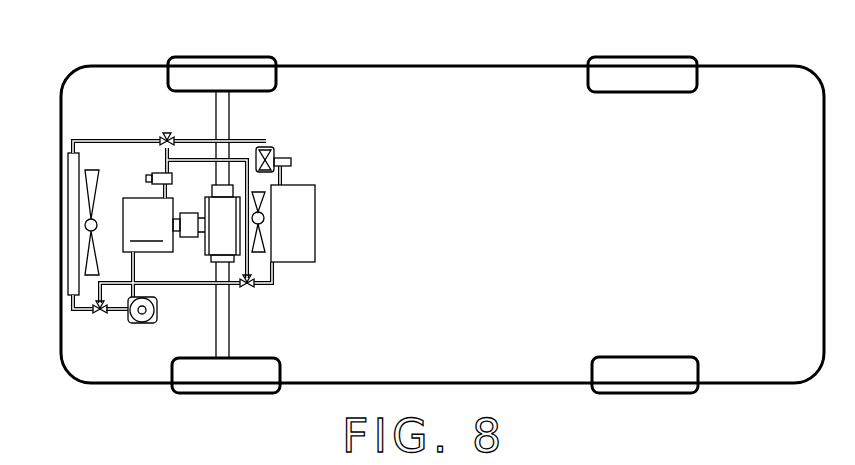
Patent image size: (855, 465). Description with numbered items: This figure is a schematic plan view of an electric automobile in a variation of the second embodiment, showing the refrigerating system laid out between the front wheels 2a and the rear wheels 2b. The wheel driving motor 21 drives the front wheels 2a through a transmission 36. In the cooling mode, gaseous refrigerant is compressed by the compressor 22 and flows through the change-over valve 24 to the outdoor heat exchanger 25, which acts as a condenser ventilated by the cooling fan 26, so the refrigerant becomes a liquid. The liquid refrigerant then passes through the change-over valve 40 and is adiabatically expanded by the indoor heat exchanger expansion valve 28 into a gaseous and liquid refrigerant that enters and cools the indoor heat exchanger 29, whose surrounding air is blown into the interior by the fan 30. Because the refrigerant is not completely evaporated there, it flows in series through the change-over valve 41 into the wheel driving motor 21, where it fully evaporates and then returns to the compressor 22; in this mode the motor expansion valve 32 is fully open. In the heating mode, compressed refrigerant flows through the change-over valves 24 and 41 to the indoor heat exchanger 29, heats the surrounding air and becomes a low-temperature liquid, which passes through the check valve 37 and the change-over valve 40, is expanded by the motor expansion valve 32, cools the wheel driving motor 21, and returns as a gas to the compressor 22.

The front wheels 2a is at (208, 62).
The rear wheels 2b is at (674, 64).
The wheel driving motor 21 is at (148, 225).
The compressor 22 is at (157, 308).
The change-over valve 24 is at (102, 317).
The outdoor heat exchanger 25 is at (69, 177).
The cooling fan 26 is at (90, 269).
The indoor heat exchanger expansion valve 28 is at (288, 160).
The indoor heat exchanger 29 is at (315, 205).
The fan 30 is at (261, 252).
The motor expansion valve 32 is at (152, 177).
The transmission 36 is at (214, 244).
The check valve 37 is at (251, 133).
The change-over valve 40 is at (166, 134).
The change-over valve 41 is at (250, 288).